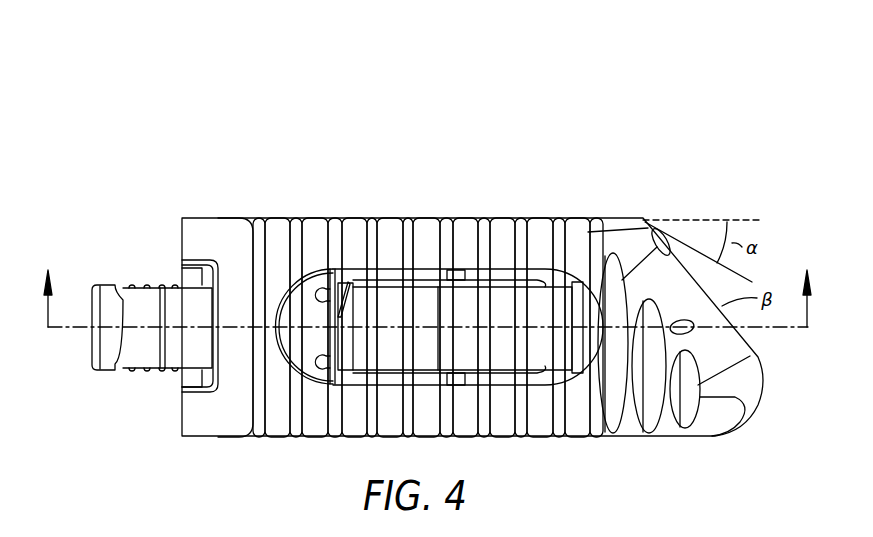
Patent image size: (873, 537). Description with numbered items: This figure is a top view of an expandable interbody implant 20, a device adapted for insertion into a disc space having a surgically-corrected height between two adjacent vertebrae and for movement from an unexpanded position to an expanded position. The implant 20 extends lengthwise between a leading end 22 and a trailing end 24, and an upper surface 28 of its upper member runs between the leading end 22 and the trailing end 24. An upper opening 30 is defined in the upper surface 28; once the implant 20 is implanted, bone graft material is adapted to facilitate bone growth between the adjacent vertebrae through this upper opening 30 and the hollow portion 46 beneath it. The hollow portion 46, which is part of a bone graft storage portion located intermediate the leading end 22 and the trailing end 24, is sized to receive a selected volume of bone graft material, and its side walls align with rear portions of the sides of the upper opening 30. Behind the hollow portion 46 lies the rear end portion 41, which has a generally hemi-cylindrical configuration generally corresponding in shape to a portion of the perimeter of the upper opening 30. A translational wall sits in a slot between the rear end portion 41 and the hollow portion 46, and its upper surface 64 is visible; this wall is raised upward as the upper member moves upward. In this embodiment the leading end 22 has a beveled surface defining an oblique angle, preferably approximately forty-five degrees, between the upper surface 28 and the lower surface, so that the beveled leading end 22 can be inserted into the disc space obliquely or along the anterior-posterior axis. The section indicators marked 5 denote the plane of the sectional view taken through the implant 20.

The section line 5- 5 is at (427, 272).
The expandable interbody implant 20 is at (187, 123).
The leading end 22 is at (765, 355).
The trailing end 24 is at (180, 417).
The upper surface 28 is at (427, 243).
The upper opening 30 is at (507, 313).
The rear end portion 41 is at (298, 300).
The hollow portion 46 is at (375, 303).
The upper surface of translational wall 64 is at (348, 280).